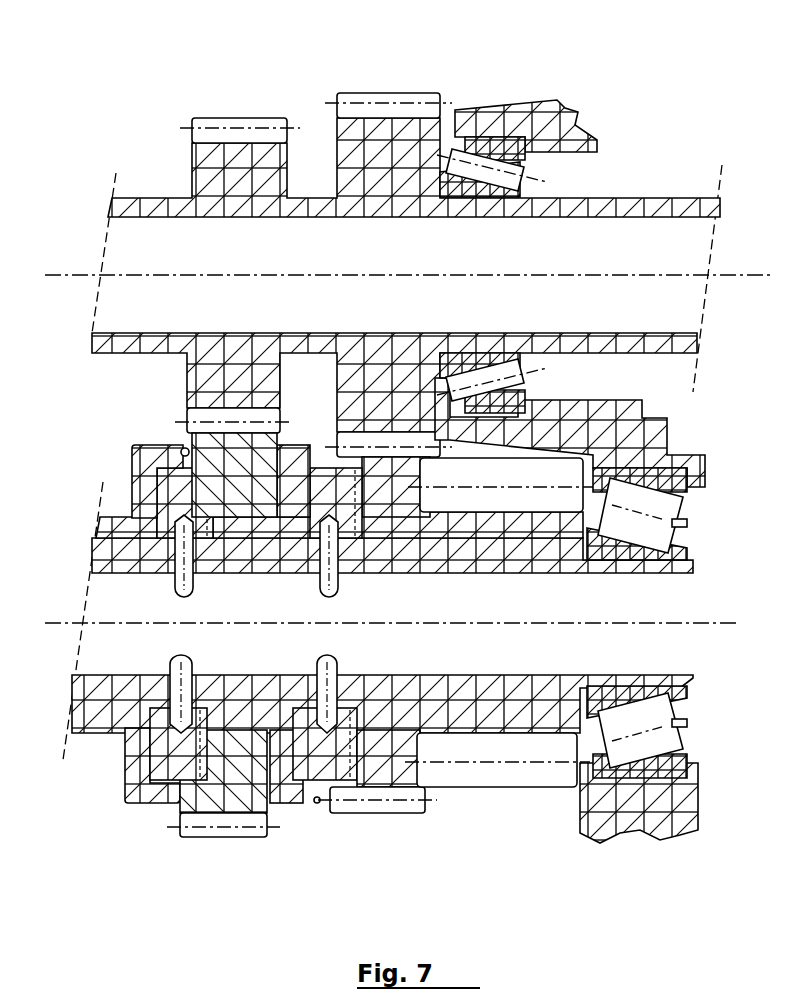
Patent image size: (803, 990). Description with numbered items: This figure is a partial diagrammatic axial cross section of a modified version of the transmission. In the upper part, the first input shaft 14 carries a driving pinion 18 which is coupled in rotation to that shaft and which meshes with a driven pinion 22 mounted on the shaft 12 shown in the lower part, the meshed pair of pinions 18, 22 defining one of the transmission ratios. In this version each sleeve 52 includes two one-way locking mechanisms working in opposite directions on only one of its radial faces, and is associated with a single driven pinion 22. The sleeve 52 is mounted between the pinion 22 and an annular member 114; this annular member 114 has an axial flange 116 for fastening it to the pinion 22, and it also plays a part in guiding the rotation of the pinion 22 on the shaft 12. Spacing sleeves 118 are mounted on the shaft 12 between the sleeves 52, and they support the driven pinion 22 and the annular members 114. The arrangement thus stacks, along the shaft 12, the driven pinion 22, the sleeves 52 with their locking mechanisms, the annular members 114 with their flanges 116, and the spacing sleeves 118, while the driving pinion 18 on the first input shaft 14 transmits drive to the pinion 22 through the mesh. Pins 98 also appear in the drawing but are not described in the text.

The shaft 12 is at (695, 597).
The first input shaft 14 is at (682, 200).
The driving pinion 18 is at (200, 163).
The driven pinion 22 is at (220, 830).
The sleeve 52 is at (158, 708).
The pin 98 is at (180, 602).
The annular member 114 is at (132, 473).
The axial flange 116 is at (185, 452).
The spacing sleeve 118 is at (113, 520).